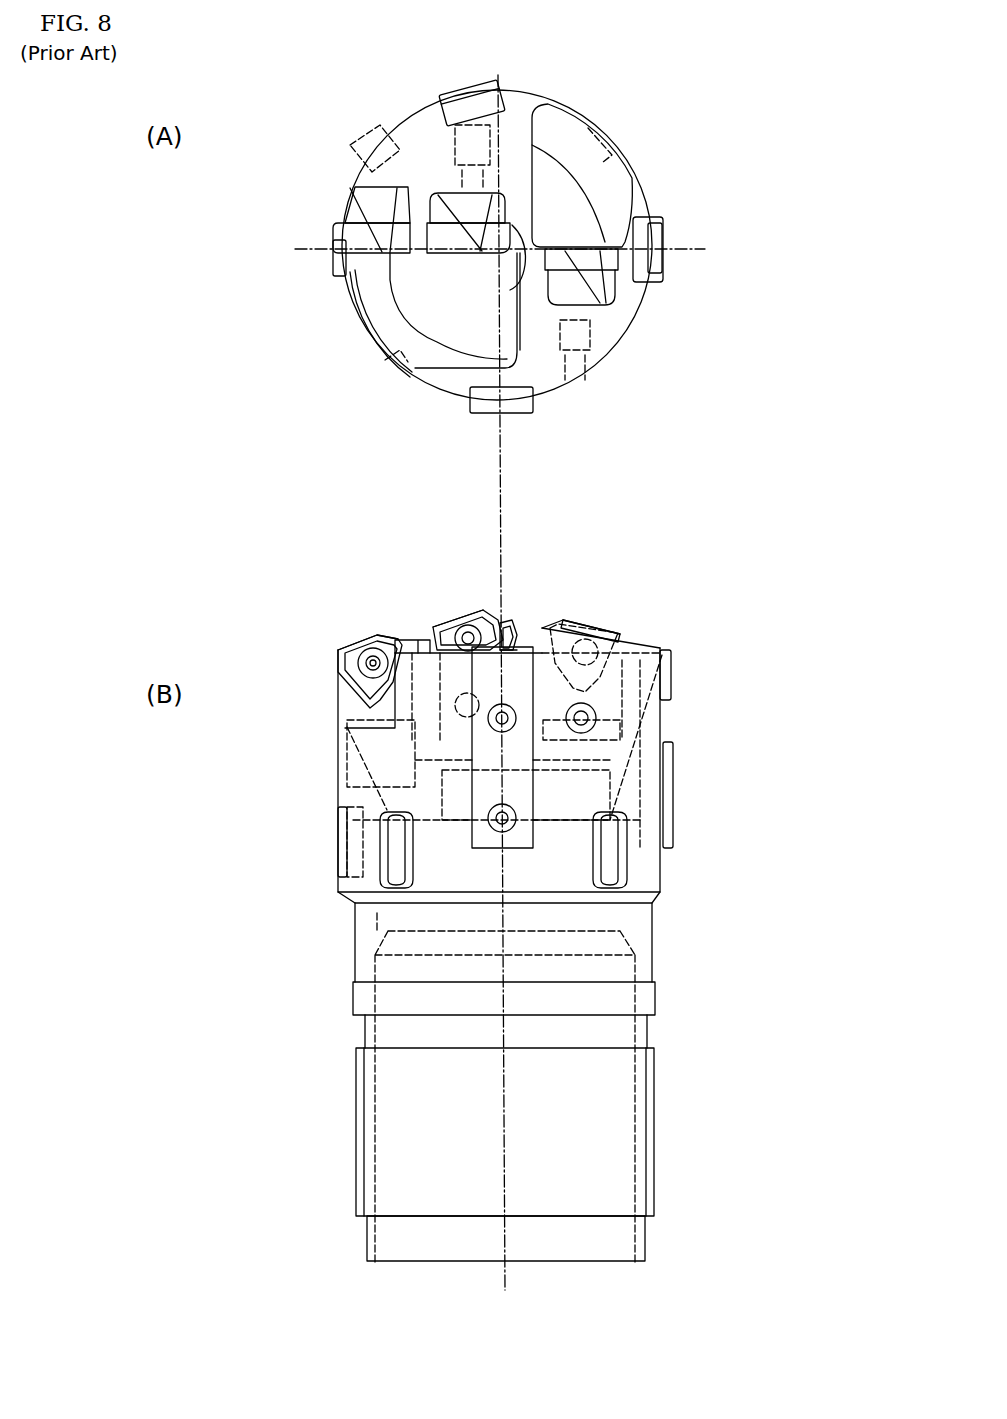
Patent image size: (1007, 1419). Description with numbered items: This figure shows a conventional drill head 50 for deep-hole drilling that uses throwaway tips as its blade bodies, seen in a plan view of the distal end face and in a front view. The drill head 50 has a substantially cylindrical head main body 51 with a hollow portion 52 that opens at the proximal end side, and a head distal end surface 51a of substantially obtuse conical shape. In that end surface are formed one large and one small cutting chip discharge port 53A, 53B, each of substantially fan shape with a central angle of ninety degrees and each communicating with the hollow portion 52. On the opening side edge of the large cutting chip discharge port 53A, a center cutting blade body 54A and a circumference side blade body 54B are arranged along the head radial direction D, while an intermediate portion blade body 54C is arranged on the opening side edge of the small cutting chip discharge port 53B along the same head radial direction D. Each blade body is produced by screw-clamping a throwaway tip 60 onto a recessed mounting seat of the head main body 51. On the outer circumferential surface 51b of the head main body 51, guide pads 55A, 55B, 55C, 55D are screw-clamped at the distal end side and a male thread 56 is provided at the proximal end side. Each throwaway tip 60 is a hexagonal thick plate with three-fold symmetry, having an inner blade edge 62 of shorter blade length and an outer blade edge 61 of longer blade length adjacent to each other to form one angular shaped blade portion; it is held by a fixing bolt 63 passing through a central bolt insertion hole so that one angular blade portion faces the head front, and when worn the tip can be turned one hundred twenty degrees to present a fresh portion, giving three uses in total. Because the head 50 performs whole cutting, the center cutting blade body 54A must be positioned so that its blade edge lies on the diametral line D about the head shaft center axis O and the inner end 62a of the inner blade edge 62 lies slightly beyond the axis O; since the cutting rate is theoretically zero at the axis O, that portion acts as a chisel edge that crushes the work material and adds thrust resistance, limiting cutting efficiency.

The drill head 50 is at (355, 163).
The head main body 51 is at (597, 117).
The head distal end surface 51a is at (547, 368).
The outer circumferential surface 51b is at (378, 759).
The hollow portion 52 is at (452, 326).
The large cutting chip discharge port 53A is at (417, 303).
The small cutting chip discharge port 53B is at (568, 205).
The center cutting blade body 54A is at (463, 258).
The circumference side blade body 54B is at (349, 305).
The intermediate portion blade body 54C is at (598, 264).
The guide pad 55A is at (665, 233).
The guide pad 55B is at (463, 88).
The guide pad 55C is at (515, 416).
The guide pad 55D is at (333, 263).
The male thread 56 is at (652, 1127).
The throwaway tip 60 is at (438, 613).
The outer blade edge 61 is at (470, 690).
The inner blade edge 62 is at (498, 613).
The inner end 62a is at (510, 621).
The fixing bolt 63 is at (370, 656).
The head radial direction D is at (316, 247).
The head shaft center axis O is at (503, 505).